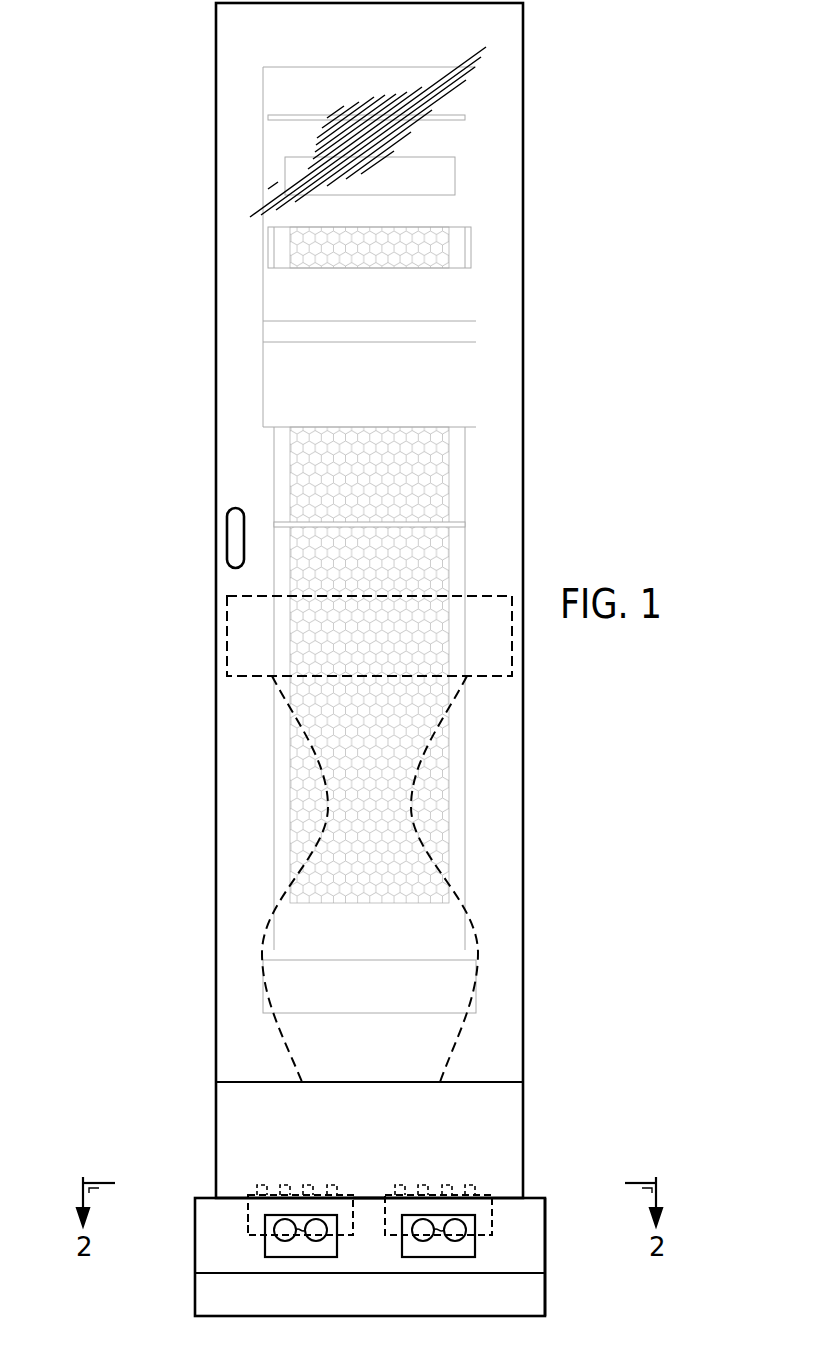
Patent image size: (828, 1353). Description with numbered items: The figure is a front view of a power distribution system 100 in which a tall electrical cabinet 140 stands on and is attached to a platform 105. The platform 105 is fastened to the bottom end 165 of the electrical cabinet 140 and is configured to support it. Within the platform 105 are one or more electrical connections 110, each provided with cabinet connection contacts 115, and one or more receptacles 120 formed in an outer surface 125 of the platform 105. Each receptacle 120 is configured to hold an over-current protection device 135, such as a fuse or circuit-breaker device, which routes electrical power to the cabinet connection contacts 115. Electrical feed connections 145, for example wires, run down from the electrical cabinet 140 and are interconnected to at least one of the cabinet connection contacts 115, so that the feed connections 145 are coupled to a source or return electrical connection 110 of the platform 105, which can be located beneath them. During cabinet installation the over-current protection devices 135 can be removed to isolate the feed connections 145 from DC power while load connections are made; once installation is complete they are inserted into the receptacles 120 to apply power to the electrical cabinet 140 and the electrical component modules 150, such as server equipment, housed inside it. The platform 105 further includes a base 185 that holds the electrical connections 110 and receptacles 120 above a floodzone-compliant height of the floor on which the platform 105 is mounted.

The power distribution system 100 is at (117, 330).
The platform 105 is at (564, 1267).
The electrical connection 110 is at (248, 1224).
The cabinet connection contacts 115 is at (252, 1188).
The receptacle 120 is at (265, 1250).
The outer surface 125 is at (535, 1231).
The over-current protection device 135 is at (300, 1250).
The electrical cabinet 140 is at (524, 172).
The electrical feed connections 145 is at (264, 923).
The electrical component modules 150 is at (227, 635).
The bottom end 165 is at (370, 1200).
The base 185 is at (200, 1289).